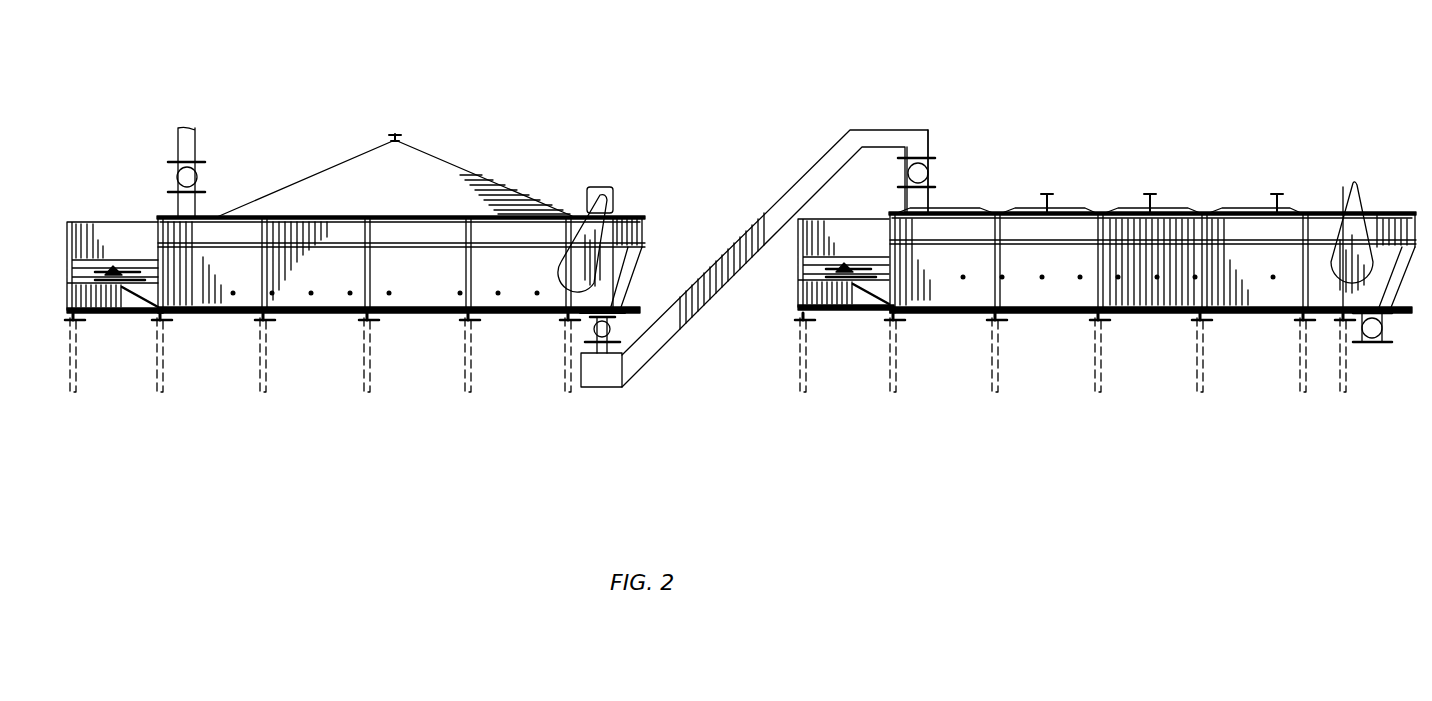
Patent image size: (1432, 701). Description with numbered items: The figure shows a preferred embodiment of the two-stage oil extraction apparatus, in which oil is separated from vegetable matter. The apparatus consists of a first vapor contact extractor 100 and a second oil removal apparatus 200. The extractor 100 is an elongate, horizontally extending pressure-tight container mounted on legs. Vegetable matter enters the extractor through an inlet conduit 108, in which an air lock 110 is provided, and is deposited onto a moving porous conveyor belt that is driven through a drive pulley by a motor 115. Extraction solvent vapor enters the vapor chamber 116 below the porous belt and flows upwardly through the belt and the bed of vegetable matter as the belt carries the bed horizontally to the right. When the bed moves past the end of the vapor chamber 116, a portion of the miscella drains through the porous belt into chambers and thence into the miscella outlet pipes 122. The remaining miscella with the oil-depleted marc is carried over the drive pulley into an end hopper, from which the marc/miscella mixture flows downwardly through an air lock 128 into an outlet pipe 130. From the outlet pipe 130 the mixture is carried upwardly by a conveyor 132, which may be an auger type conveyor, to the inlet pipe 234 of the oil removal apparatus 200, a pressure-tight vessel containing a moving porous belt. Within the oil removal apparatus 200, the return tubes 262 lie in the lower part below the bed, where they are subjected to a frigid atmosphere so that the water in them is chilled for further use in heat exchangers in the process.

The vapor contact extractor 100 is at (74, 221).
The inlet conduit 108 is at (175, 210).
The air lock 110 is at (172, 175).
The motor 115 is at (600, 187).
The vapor chamber 116 is at (394, 135).
The miscella outlet pipes 122 is at (537, 293).
The air lock 128 is at (594, 330).
The outlet pipe 130 is at (590, 367).
The conveyor 132 is at (803, 177).
The inlet pipe 234 is at (915, 128).
The return tubes 262 is at (1042, 277).
The oil removal apparatus 200 is at (1393, 218).